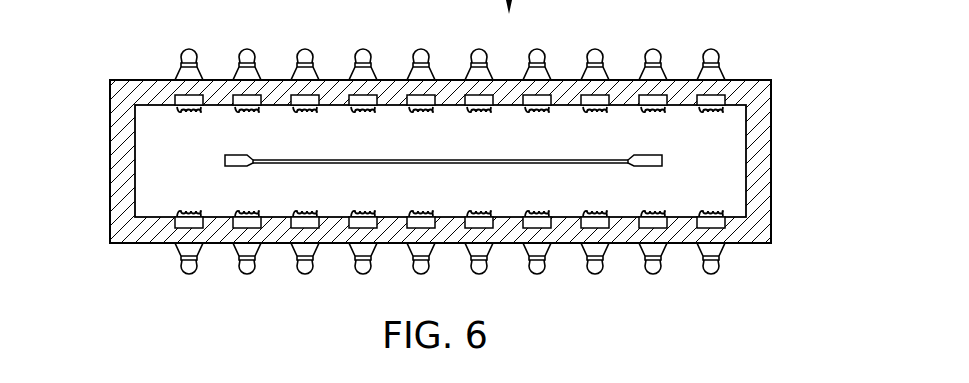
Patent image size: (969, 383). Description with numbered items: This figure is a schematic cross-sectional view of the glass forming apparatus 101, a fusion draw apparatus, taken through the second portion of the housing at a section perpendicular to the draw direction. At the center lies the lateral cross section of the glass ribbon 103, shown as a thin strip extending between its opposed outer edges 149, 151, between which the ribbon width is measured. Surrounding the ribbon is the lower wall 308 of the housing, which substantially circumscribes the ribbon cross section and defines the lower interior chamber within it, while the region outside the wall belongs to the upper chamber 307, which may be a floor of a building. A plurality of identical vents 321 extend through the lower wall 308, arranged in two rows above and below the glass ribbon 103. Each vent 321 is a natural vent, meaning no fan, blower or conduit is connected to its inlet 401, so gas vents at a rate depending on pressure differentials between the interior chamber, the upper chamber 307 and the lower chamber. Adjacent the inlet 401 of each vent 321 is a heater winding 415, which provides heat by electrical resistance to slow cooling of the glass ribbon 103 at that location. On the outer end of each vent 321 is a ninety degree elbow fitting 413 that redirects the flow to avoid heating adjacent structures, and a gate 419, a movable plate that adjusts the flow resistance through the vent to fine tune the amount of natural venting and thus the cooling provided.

The glass forming apparatus 101 is at (782, 52).
The glass ribbon 103 is at (420, 164).
The outer edge 149 is at (225, 161).
The outer edge 151 is at (663, 163).
The upper chamber 307 is at (772, 165).
The lower wall 308 is at (110, 222).
The vent 321 is at (231, 118).
The inlet 401 is at (262, 101).
The 90° elbow fitting 413 is at (594, 47).
The heater winding 415 is at (370, 128).
The gate 419 is at (650, 54).